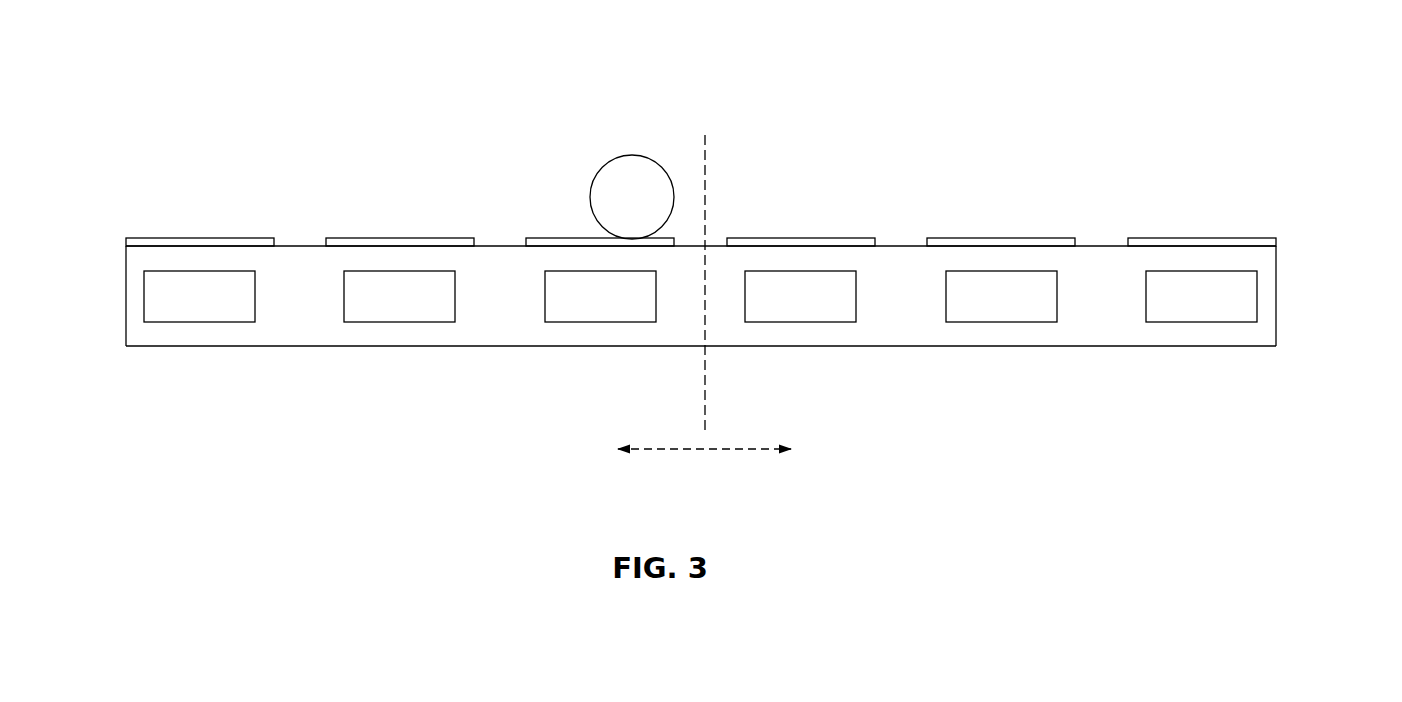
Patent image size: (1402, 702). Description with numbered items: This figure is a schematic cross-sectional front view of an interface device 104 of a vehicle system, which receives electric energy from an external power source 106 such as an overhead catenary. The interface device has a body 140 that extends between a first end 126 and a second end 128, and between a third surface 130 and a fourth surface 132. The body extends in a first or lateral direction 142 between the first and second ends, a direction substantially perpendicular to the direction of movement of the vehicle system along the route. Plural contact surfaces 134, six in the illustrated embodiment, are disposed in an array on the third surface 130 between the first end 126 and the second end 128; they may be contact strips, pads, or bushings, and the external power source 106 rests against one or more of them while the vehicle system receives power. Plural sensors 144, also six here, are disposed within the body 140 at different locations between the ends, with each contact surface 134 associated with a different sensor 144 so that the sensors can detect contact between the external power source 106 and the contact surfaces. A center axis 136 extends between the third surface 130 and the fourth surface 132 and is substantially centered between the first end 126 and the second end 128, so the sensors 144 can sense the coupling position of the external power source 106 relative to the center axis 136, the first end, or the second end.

The interface device 104 is at (229, 81).
The external power source 106 is at (626, 151).
The first end 126 is at (121, 302).
The second end 128 is at (1281, 310).
The third surface 130 is at (302, 238).
The fourth surface 132 is at (514, 350).
The contact surfaces 134 is at (191, 236).
The center axis 136 is at (709, 145).
The body 140 is at (1104, 328).
The lateral direction 142 is at (745, 452).
The sensors 144 is at (190, 326).